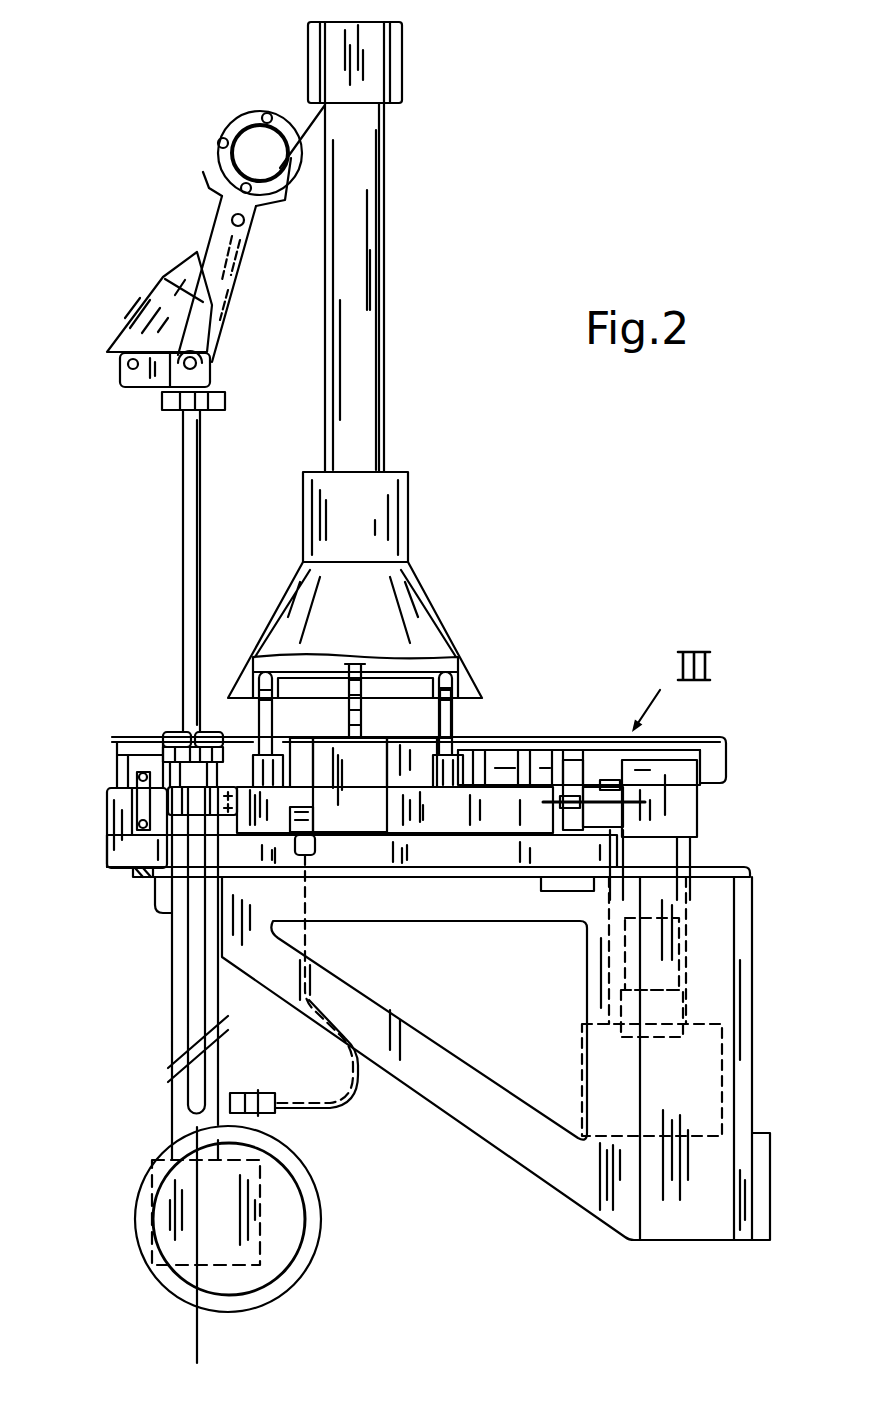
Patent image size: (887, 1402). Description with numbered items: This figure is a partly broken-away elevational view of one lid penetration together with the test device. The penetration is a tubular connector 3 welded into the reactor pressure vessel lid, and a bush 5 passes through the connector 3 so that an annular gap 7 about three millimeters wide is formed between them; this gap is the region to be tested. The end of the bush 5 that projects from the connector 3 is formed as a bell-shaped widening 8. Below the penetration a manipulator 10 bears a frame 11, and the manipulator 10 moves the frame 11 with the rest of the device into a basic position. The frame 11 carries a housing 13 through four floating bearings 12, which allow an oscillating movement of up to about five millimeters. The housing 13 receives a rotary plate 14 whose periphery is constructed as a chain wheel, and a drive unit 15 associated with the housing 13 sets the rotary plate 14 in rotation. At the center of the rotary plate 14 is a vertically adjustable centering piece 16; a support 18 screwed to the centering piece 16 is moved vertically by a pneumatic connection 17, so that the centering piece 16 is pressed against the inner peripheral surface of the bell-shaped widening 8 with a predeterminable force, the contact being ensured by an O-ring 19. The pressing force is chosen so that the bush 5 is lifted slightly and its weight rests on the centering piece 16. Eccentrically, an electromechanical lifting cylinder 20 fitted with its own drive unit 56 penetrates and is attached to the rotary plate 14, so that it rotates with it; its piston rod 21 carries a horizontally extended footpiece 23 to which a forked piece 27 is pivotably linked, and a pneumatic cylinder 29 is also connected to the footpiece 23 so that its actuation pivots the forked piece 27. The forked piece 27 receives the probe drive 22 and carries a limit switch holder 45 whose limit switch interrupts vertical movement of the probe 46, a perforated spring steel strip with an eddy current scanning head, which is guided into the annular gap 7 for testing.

The tubular connector 3 is at (402, 87).
The bush 5 is at (422, 498).
The annular gap 7 is at (398, 105).
The bell-shaped widening 8 is at (449, 676).
The manipulator 10 is at (600, 1241).
The frame 11 is at (732, 871).
The floating bearings 12 is at (150, 890).
The housing 13 is at (106, 815).
The rotary plate 14 is at (478, 836).
The drive unit 15 is at (715, 792).
The centering piece 16 is at (454, 694).
The pneumatic connection 17 is at (316, 857).
The support 18 is at (384, 721).
The O-ring 19 is at (457, 692).
The electromechanical lifting cylinder 20 is at (186, 968).
The piston rod 21 is at (182, 555).
The probe drive 22 is at (250, 138).
The footpiece 23 is at (152, 378).
The forked piece 27 is at (234, 252).
The pneumatic cylinder 29 is at (190, 258).
The limit switch holder 45 is at (311, 126).
The probe 46 is at (198, 1347).
The drive unit 56 is at (308, 1295).